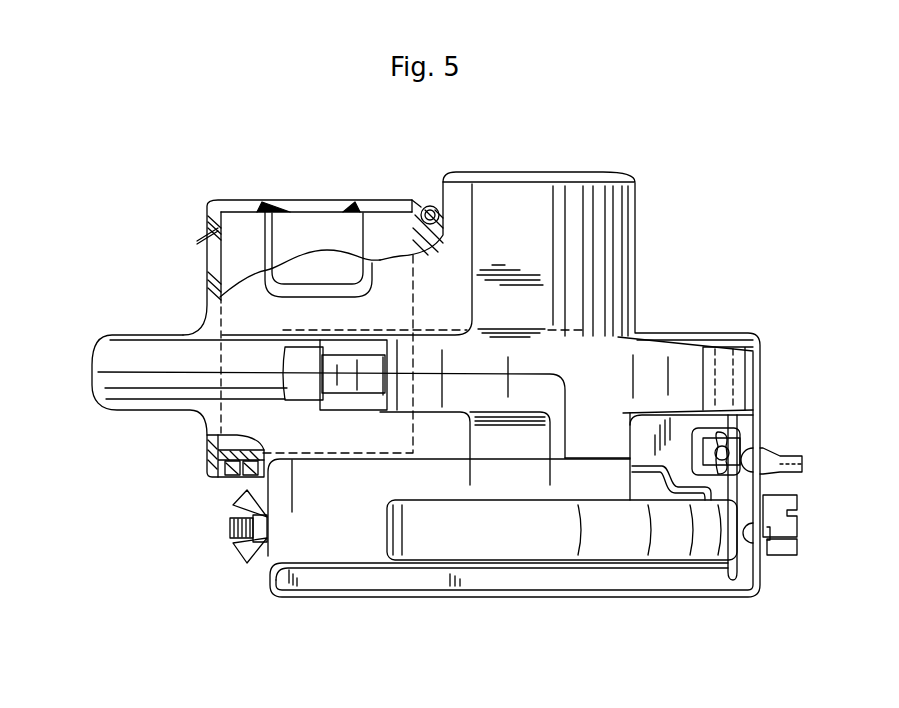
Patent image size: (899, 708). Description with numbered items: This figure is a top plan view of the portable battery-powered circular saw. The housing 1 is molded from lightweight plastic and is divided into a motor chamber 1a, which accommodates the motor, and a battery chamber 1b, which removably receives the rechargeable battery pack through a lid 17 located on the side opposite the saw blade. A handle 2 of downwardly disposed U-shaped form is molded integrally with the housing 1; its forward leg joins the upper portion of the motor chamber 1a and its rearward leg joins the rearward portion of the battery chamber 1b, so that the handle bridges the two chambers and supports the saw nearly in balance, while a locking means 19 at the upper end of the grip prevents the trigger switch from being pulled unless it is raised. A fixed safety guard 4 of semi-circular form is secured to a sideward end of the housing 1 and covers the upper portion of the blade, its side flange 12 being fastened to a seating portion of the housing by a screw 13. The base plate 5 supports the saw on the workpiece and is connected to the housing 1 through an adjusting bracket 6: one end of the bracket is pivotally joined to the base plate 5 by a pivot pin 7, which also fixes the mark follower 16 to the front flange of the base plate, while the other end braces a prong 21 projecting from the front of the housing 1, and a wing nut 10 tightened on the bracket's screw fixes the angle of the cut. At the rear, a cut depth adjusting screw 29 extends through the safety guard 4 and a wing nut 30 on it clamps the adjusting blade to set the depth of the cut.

The housing 1 is at (505, 173).
The motor chamber 1a is at (573, 243).
The battery chamber 1b is at (305, 303).
The lid 17 is at (266, 208).
The locking means 19 is at (340, 372).
The handle 2 is at (188, 390).
The side flange 12 is at (210, 472).
The screw 13 is at (235, 473).
The cut depth adjusting screw 29 is at (233, 532).
The wing nut 30 is at (245, 550).
The fixed safety guard 4 is at (555, 538).
The base plate 5 is at (617, 598).
The adjusting bracket 6 is at (757, 425).
The wing nut 10 is at (803, 461).
The pivot pin 7 is at (768, 532).
The mark follower 16 is at (784, 548).
The prong 21 is at (687, 372).